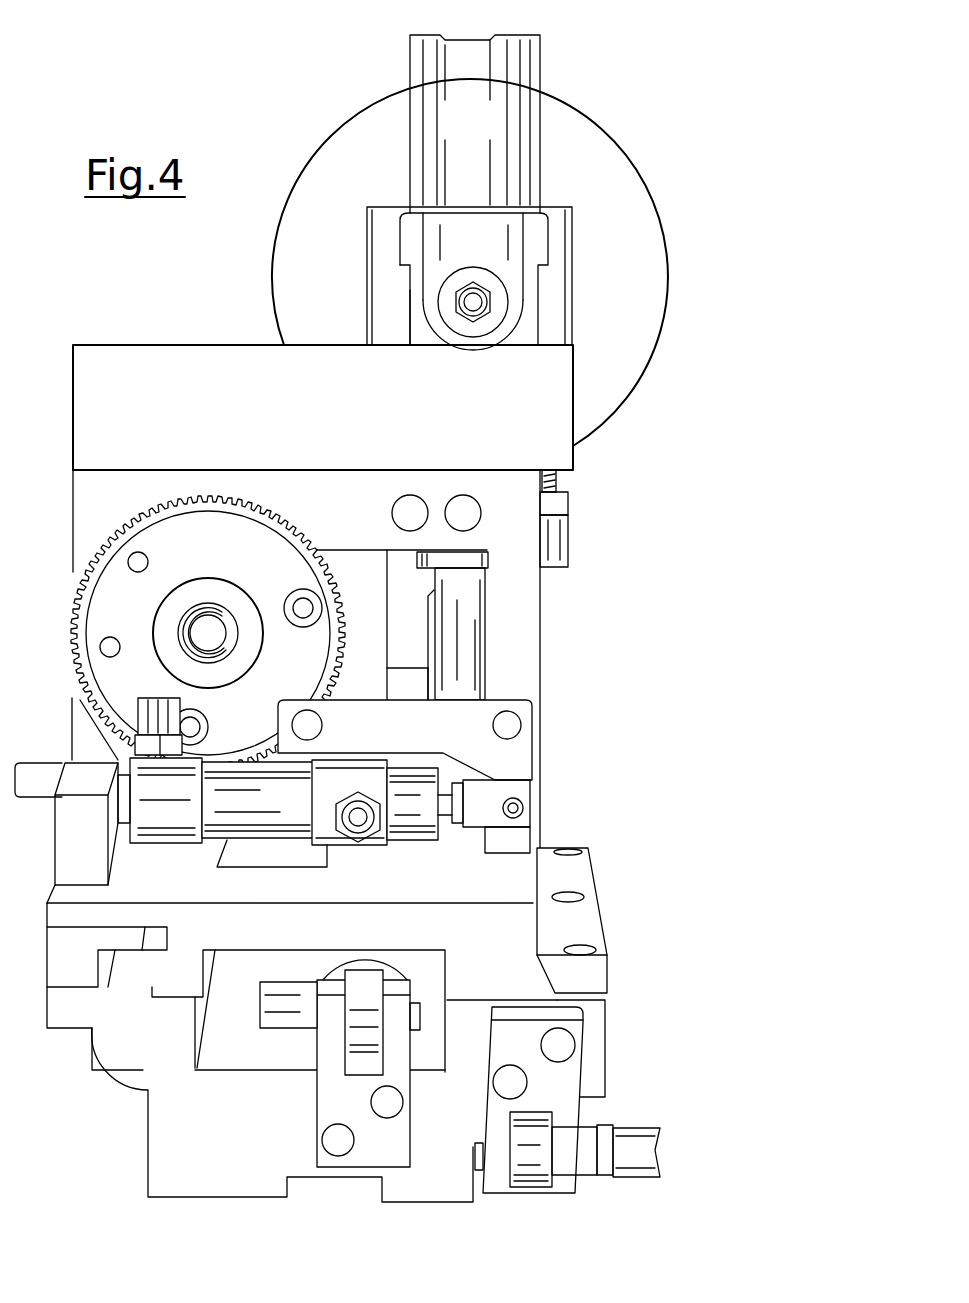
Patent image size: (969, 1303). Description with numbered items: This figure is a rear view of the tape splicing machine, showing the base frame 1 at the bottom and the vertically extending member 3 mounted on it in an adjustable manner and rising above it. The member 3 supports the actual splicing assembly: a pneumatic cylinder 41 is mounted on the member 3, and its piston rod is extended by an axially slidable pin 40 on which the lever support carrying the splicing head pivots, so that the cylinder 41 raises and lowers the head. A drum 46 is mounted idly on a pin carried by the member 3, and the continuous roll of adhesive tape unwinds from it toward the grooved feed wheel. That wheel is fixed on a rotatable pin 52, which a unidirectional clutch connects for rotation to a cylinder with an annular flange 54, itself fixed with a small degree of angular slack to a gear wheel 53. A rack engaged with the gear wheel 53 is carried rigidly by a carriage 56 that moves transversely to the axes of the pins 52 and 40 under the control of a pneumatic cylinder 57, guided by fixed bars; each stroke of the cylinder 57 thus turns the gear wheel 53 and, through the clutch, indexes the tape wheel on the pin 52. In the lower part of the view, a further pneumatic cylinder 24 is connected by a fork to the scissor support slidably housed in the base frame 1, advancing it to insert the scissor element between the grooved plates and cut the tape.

The base frame 1 is at (223, 1128).
The vertically extending member 3 is at (525, 630).
The pneumatic cylinder 24 is at (370, 990).
The axially slidable pin 40 is at (475, 672).
The pneumatic cylinder 41 is at (441, 75).
The drum 46 is at (642, 213).
The rotatable pin 52 is at (213, 632).
The gear wheel 53 is at (137, 527).
The cylinder with an annular flange 54 is at (252, 540).
The carriage 56 is at (353, 717).
The pneumatic cylinder 57 is at (260, 815).